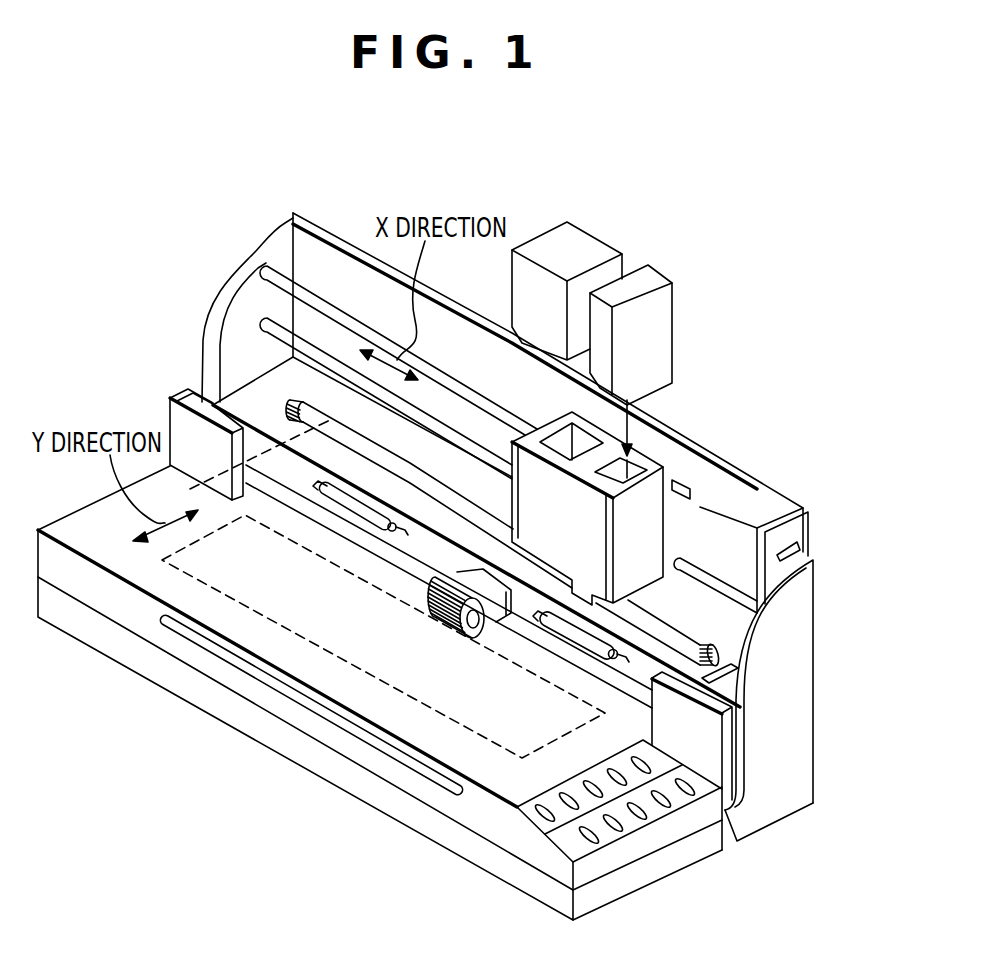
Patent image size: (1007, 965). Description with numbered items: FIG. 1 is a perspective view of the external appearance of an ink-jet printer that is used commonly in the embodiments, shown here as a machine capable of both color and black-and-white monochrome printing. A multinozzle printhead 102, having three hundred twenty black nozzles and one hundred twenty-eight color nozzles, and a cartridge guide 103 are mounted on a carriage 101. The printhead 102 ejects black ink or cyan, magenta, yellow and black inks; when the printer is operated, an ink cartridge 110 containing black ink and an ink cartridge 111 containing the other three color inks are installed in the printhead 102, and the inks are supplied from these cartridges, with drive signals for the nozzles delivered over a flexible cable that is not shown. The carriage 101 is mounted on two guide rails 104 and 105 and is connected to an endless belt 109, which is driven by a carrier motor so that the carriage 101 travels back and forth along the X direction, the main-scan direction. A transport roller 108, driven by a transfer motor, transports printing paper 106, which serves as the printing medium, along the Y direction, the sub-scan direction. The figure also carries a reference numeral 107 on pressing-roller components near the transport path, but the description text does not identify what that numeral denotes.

The carriage 101 is at (685, 525).
The multinozzle printhead 102 is at (683, 562).
The cartridge guide 103 is at (655, 484).
The guide rail 104 is at (268, 328).
The guide rail 105 is at (265, 266).
The printing paper 106 is at (482, 720).
The pinch rollers 107 is at (567, 623).
The transport roller 108 is at (187, 394).
The endless belt 109 is at (708, 630).
The ink cartridge 110 is at (673, 330).
The ink cartridge 111 is at (566, 220).